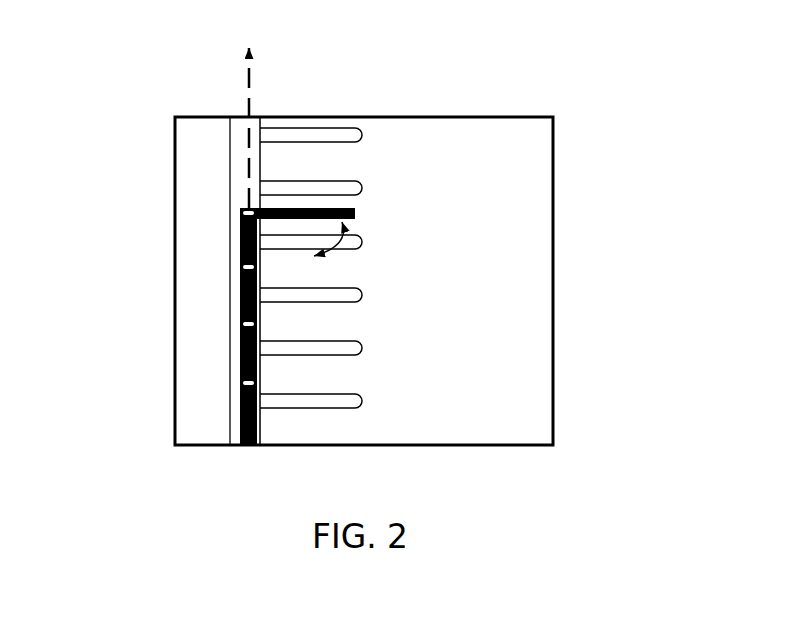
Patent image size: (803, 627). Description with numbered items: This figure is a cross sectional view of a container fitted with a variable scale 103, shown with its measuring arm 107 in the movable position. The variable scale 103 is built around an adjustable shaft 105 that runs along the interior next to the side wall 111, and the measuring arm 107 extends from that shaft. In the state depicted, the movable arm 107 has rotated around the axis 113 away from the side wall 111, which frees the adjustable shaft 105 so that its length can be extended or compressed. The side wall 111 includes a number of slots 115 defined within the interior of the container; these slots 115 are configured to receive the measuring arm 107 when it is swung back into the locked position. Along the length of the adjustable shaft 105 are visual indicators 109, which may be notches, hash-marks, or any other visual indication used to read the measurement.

The variable scale 103 is at (206, 207).
The adjustable shaft 105 is at (238, 422).
The measuring arm 107 is at (306, 208).
The visual indicators 109 is at (236, 382).
The side wall 111 is at (536, 174).
The axis 113 is at (278, 120).
The slots 115 is at (366, 136).